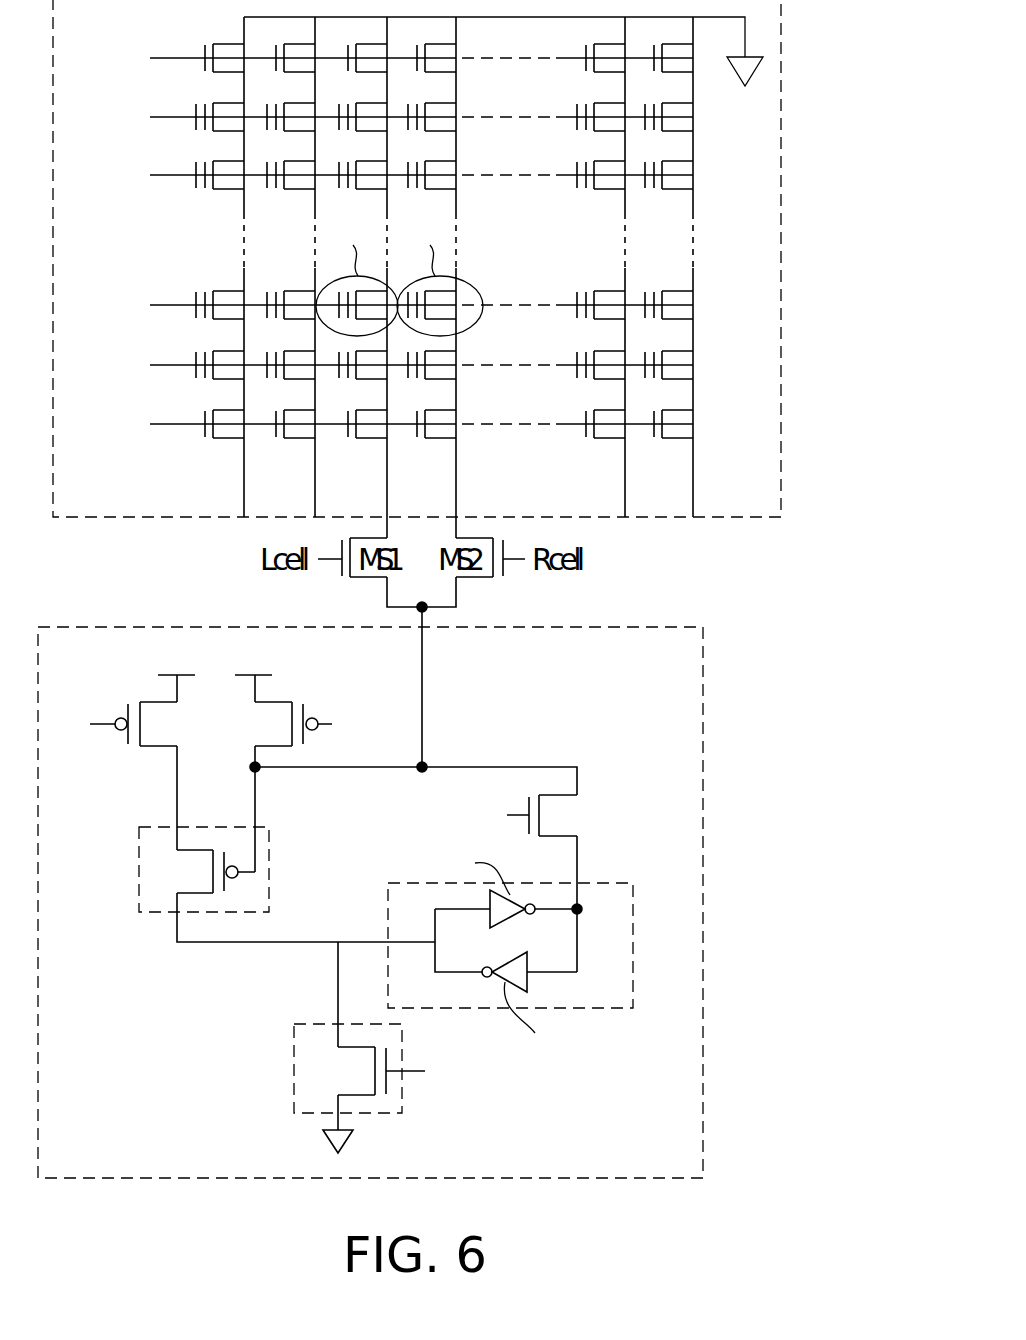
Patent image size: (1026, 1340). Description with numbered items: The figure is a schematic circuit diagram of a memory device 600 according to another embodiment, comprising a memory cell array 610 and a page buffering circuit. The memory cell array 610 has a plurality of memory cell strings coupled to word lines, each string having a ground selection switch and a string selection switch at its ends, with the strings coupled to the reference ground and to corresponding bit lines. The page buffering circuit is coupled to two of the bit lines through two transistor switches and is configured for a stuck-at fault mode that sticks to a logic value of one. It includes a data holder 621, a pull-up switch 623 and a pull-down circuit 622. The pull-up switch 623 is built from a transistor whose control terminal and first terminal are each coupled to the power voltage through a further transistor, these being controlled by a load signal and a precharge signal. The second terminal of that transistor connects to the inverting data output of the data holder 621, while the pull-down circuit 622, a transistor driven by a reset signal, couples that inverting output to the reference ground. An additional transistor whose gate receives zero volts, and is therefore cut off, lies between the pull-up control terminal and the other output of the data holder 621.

The memory device 600 is at (803, 1220).
The memory cell array 610 is at (781, 212).
The data holder 621 is at (597, 882).
The pull-down circuit 622 is at (402, 1095).
The pull-up switch 623 is at (269, 857).